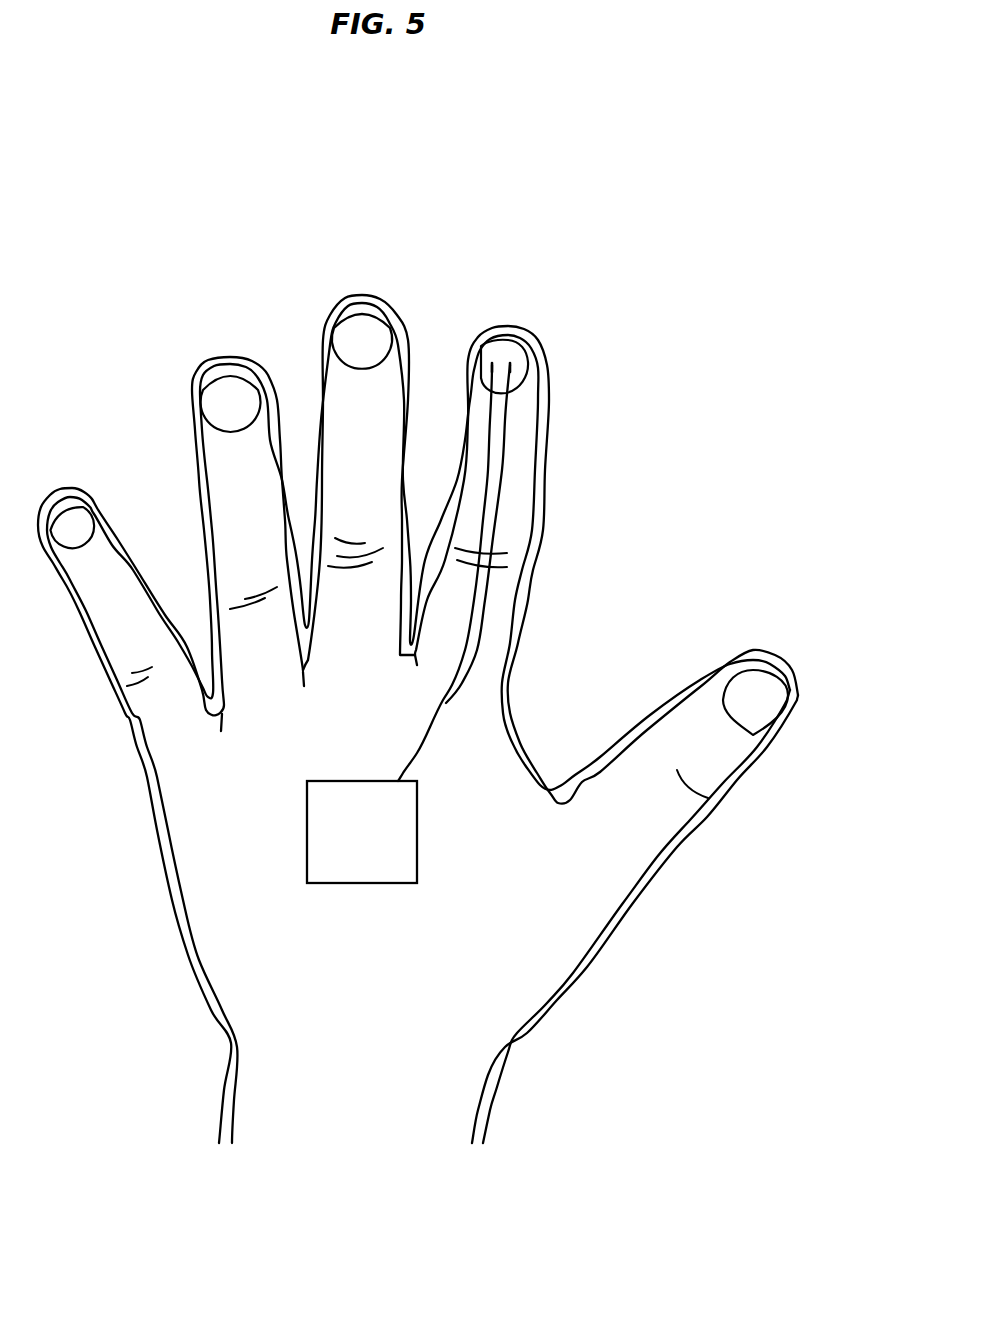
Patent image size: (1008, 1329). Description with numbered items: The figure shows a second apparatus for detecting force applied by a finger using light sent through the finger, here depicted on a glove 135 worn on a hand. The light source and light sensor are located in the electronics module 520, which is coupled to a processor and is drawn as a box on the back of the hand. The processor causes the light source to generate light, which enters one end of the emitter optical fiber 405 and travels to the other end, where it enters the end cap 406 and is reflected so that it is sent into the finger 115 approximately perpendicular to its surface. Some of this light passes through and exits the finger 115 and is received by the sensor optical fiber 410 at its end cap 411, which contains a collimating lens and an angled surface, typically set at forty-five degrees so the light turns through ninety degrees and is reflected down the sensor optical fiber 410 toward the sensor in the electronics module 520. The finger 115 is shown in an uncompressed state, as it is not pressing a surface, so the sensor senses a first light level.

The emitter optical fiber 405 is at (477, 477).
The end cap 406 is at (492, 358).
The end cap 411 is at (512, 353).
The sensor optical fiber 410 is at (508, 453).
The finger 115 is at (533, 520).
The glove 135 is at (522, 618).
The electronics module 520 is at (305, 842).